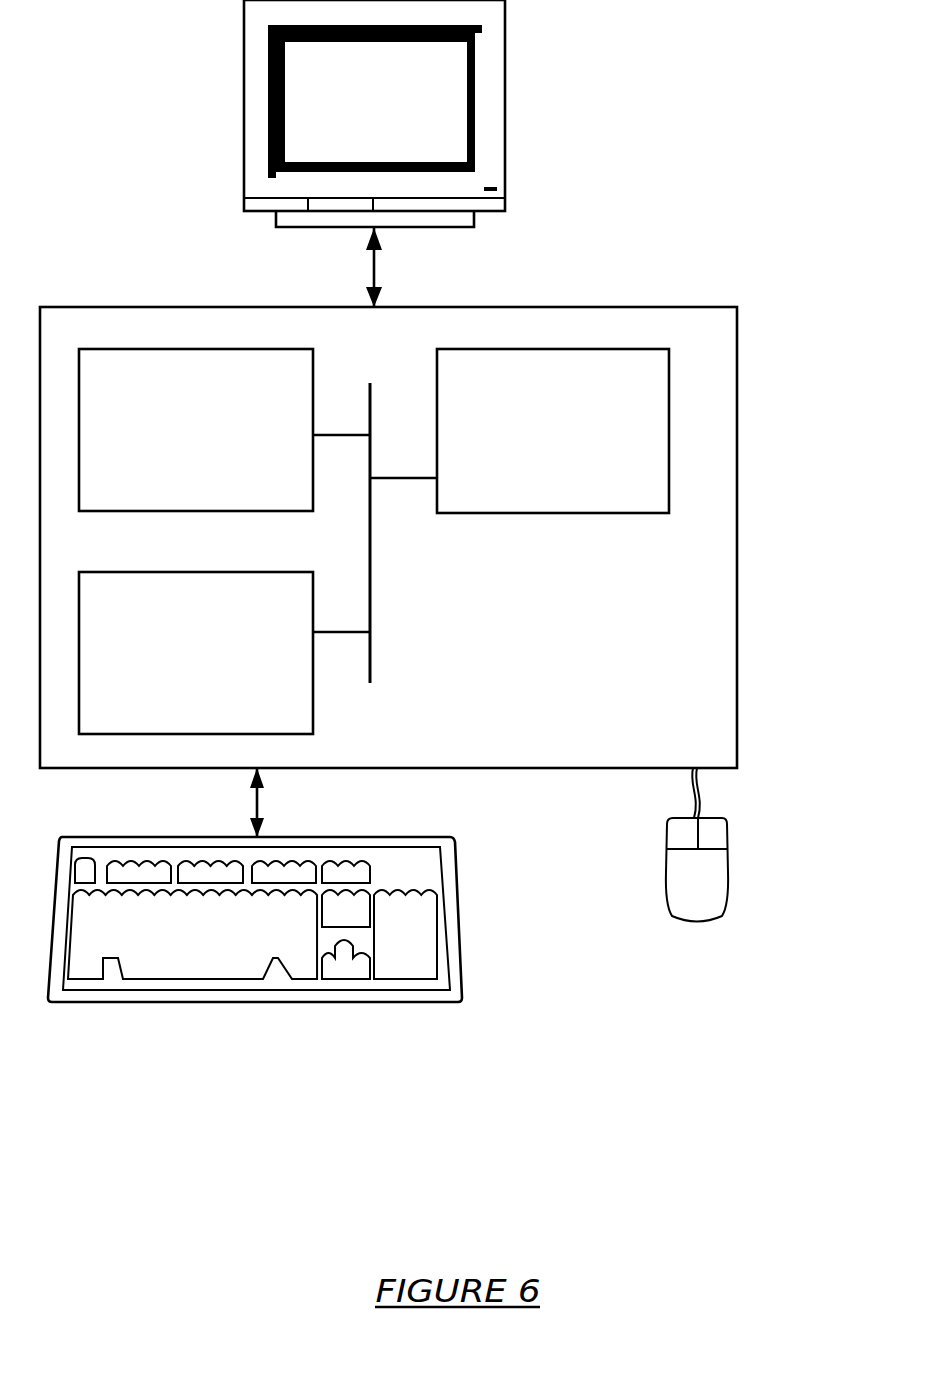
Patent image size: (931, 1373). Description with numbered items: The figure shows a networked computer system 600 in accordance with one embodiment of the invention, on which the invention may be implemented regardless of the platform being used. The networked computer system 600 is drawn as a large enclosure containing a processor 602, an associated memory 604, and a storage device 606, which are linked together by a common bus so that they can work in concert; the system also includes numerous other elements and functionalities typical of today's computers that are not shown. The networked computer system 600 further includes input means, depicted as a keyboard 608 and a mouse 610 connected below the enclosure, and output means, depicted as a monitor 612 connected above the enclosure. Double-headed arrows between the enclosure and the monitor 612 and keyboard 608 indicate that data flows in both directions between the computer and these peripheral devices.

The networked computer system 600 is at (758, 159).
The processor 602 is at (530, 443).
The memory 604 is at (174, 443).
The storage device 606 is at (169, 665).
The keyboard 608 is at (167, 950).
The mouse 610 is at (674, 893).
The monitor 612 is at (351, 117).